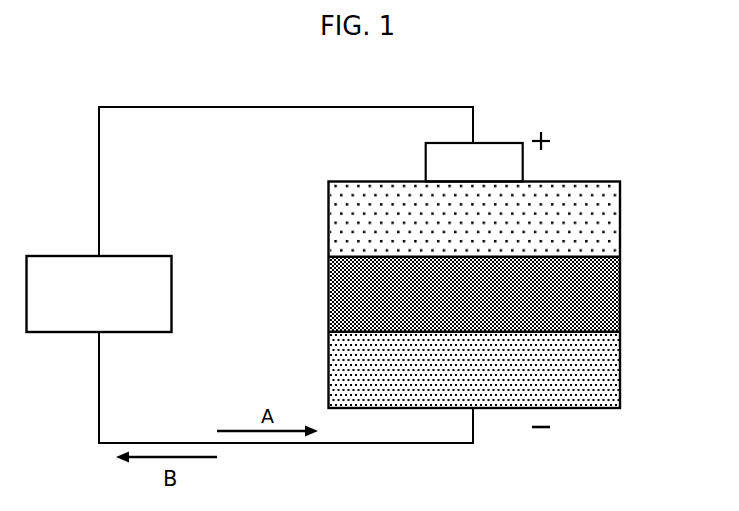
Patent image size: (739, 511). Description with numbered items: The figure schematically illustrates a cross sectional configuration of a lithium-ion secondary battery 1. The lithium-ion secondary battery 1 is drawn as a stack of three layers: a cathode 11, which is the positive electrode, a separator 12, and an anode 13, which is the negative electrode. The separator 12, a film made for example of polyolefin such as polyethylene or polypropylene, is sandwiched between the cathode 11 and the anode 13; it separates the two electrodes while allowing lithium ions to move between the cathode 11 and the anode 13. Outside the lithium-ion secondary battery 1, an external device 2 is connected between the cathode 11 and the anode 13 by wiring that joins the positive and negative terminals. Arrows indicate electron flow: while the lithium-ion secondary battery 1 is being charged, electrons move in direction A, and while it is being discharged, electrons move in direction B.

The lithium-ion secondary battery 1 is at (662, 182).
The external device 2 is at (165, 294).
The cathode 11 is at (608, 221).
The separator 12 is at (608, 296).
The anode 13 is at (608, 371).